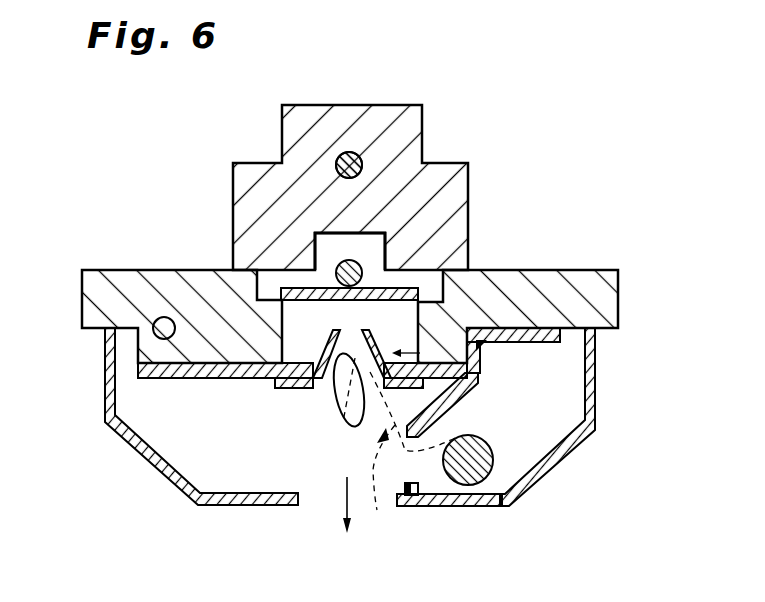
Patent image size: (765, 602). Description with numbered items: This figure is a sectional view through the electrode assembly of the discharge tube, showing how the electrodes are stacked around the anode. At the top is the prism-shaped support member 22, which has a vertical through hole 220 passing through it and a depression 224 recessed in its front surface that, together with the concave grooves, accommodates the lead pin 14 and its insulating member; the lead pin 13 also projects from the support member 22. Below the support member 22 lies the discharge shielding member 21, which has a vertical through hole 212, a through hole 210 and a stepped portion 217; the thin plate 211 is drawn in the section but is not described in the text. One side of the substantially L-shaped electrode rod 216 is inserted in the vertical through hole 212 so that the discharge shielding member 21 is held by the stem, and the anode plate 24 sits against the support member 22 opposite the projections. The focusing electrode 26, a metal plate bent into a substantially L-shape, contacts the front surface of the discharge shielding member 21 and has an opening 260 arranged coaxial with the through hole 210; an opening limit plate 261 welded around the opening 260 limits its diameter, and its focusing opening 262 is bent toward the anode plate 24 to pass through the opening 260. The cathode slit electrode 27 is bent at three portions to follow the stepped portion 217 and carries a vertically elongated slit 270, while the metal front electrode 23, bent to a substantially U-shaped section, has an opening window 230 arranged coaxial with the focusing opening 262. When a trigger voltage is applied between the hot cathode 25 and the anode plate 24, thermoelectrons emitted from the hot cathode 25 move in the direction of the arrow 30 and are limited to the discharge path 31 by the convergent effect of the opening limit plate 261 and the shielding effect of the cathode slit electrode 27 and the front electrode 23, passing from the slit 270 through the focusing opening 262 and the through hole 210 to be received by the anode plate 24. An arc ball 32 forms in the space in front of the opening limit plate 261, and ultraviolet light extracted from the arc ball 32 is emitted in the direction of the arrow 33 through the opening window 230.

The support member 22 is at (373, 104).
The lead pin 13 is at (363, 155).
The vertical through hole 220 is at (337, 160).
The lead pin 14 is at (312, 262).
The depression 224 is at (343, 247).
The anode plate 24 is at (337, 270).
The discharge shielding member 21 is at (568, 270).
The plate 211 is at (433, 280).
The through hole 210 is at (400, 333).
The electrode rod 216 is at (152, 334).
The vertical through hole 212 is at (137, 363).
The focusing electrode 26 is at (225, 378).
The focusing opening 262 is at (327, 378).
The opening limit plate 261 is at (290, 388).
The stepped portion 217 is at (483, 346).
The opening 260 is at (478, 373).
The cathode slit electrode 27 is at (593, 345).
The hot cathode 25 is at (509, 502).
The front electrode 23 is at (148, 462).
The arrow 30 is at (435, 440).
The slit 270 is at (440, 497).
The opening window 230 is at (410, 495).
The arc ball 32 is at (335, 468).
The discharge path 31 is at (407, 456).
The arrow 33 is at (349, 534).